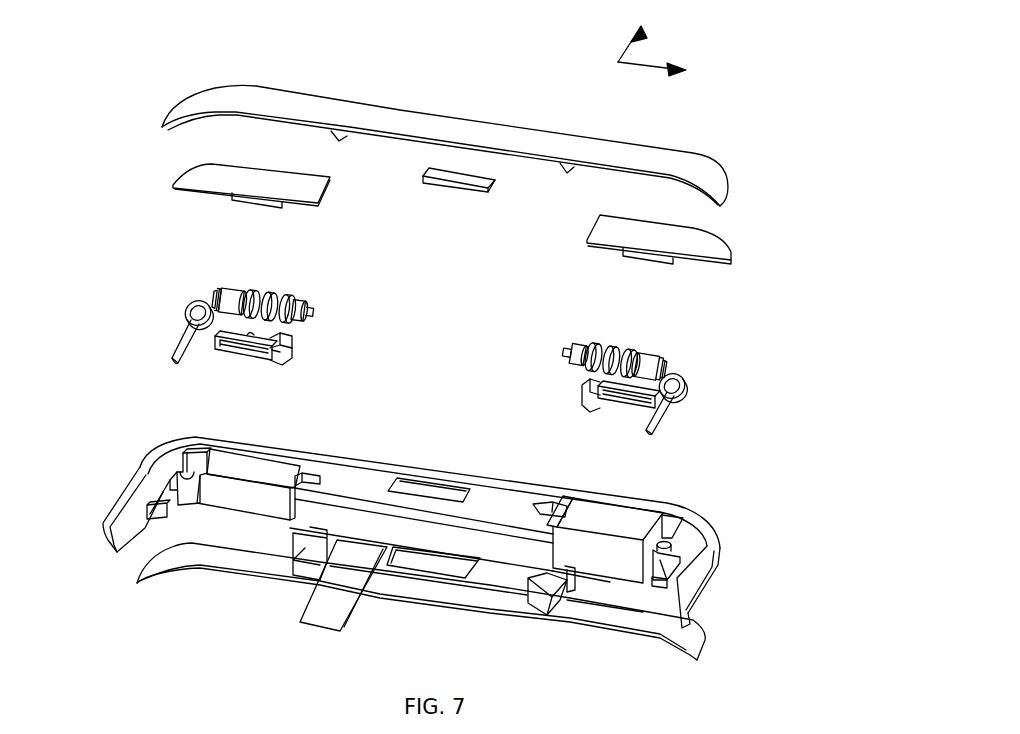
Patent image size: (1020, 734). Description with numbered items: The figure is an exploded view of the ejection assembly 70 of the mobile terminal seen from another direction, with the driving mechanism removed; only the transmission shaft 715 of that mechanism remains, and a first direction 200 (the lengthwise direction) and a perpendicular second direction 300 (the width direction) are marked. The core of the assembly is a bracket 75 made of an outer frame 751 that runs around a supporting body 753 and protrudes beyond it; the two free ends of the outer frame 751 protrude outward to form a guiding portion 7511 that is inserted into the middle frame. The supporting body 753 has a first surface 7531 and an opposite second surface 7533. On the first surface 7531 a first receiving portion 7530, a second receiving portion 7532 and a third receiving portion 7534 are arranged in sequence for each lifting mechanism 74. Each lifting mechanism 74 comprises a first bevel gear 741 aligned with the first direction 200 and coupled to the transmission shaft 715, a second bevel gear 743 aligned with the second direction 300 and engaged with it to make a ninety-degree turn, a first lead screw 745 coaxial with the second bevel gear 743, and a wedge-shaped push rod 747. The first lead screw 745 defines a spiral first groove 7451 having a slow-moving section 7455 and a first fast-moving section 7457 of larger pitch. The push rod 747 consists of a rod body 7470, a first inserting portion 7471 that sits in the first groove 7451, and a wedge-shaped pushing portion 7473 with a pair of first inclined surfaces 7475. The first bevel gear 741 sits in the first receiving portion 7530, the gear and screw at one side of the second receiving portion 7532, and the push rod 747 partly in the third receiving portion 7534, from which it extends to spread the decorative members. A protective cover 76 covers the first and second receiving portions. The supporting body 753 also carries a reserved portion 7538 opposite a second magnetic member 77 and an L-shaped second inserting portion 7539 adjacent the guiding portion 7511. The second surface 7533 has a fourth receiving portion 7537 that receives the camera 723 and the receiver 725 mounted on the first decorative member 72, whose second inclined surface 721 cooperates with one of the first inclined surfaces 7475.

The ejection assembly 70 is at (347, 28).
The first direction 200 is at (642, 31).
The second direction 300 is at (673, 71).
The protective cover 76 is at (220, 178).
The second magnetic member 77 is at (452, 190).
The first groove 7451 is at (348, 250).
The slow-moving section 7455 is at (269, 274).
The first fast-moving section 7457 is at (285, 296).
The transmission shaft 715 is at (183, 343).
The push rod 747 is at (372, 324).
The rod body 7470 is at (290, 350).
The first inserting portion 7471 is at (250, 337).
The pushing portion 7473 is at (275, 358).
The lifting mechanism 74 is at (655, 404).
The first lead screw 745 is at (642, 346).
The second bevel gear 743 is at (658, 356).
The first bevel gear 741 is at (685, 388).
The first inclined surfaces 7475 is at (592, 387).
The bracket 75 is at (97, 412).
The outer frame 751 is at (180, 452).
The supporting body 753 is at (165, 466).
The first receiving portion 7530 is at (195, 472).
The first surface 7531 is at (365, 467).
The second receiving portion 7532 is at (246, 465).
The second surface 7533 is at (265, 518).
The third receiving portion 7534 is at (303, 477).
The fourth receiving portion 7537 is at (497, 533).
The reserved portion 7538 is at (434, 495).
The second inserting portion 7539 is at (658, 580).
The guiding portion 7511 is at (693, 587).
The first decorative member 72 is at (170, 562).
The camera 723 is at (330, 605).
The receiver 725 is at (430, 575).
The second inclined surface 721 is at (546, 600).